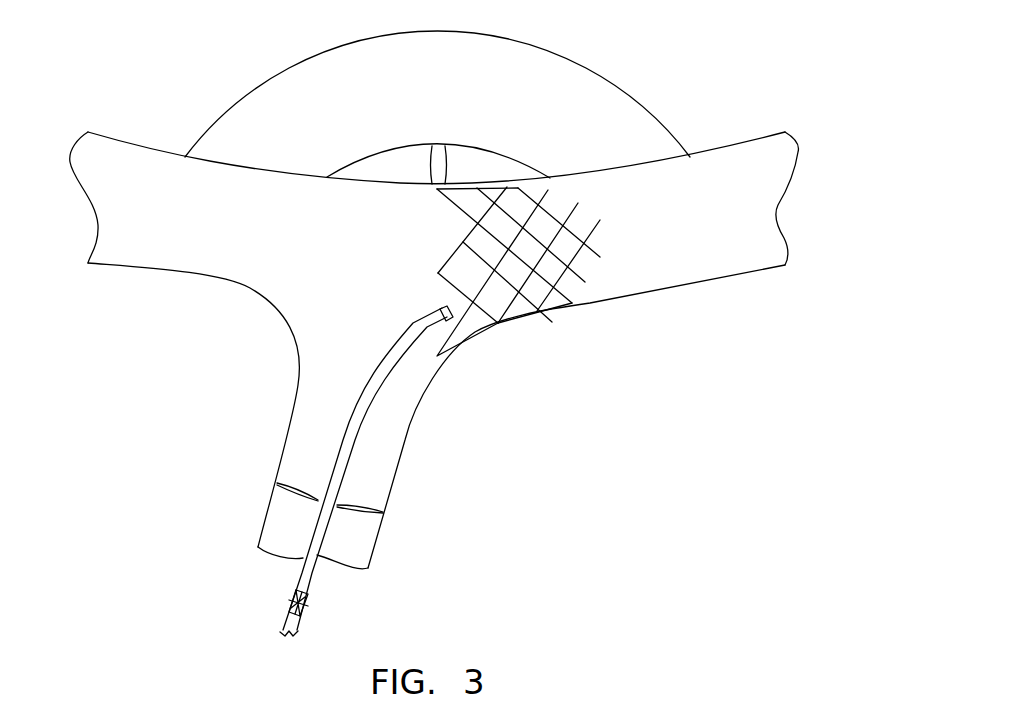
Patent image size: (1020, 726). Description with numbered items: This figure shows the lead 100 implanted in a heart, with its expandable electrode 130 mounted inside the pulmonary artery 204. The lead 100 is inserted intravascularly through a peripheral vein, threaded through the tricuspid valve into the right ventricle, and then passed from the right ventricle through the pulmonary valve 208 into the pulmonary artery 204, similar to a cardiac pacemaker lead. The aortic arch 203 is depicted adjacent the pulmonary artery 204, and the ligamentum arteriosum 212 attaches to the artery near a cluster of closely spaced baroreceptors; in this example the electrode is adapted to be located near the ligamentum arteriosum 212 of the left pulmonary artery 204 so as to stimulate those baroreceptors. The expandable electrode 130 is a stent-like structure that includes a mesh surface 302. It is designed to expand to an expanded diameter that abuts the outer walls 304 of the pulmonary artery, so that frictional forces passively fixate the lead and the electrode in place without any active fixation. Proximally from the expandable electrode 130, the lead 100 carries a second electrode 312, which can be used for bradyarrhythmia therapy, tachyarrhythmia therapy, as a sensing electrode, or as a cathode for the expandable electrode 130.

The lead 100 is at (298, 573).
The expandable electrode 130 is at (542, 312).
The aortic arch 203 is at (532, 56).
The pulmonary artery 204 is at (434, 327).
The pulmonary valve 208 is at (365, 510).
The ligamentum arteriosum 212 is at (441, 164).
The mesh surface 302 is at (497, 327).
The outer walls 304 is at (645, 170).
The second electrode 312 is at (305, 603).